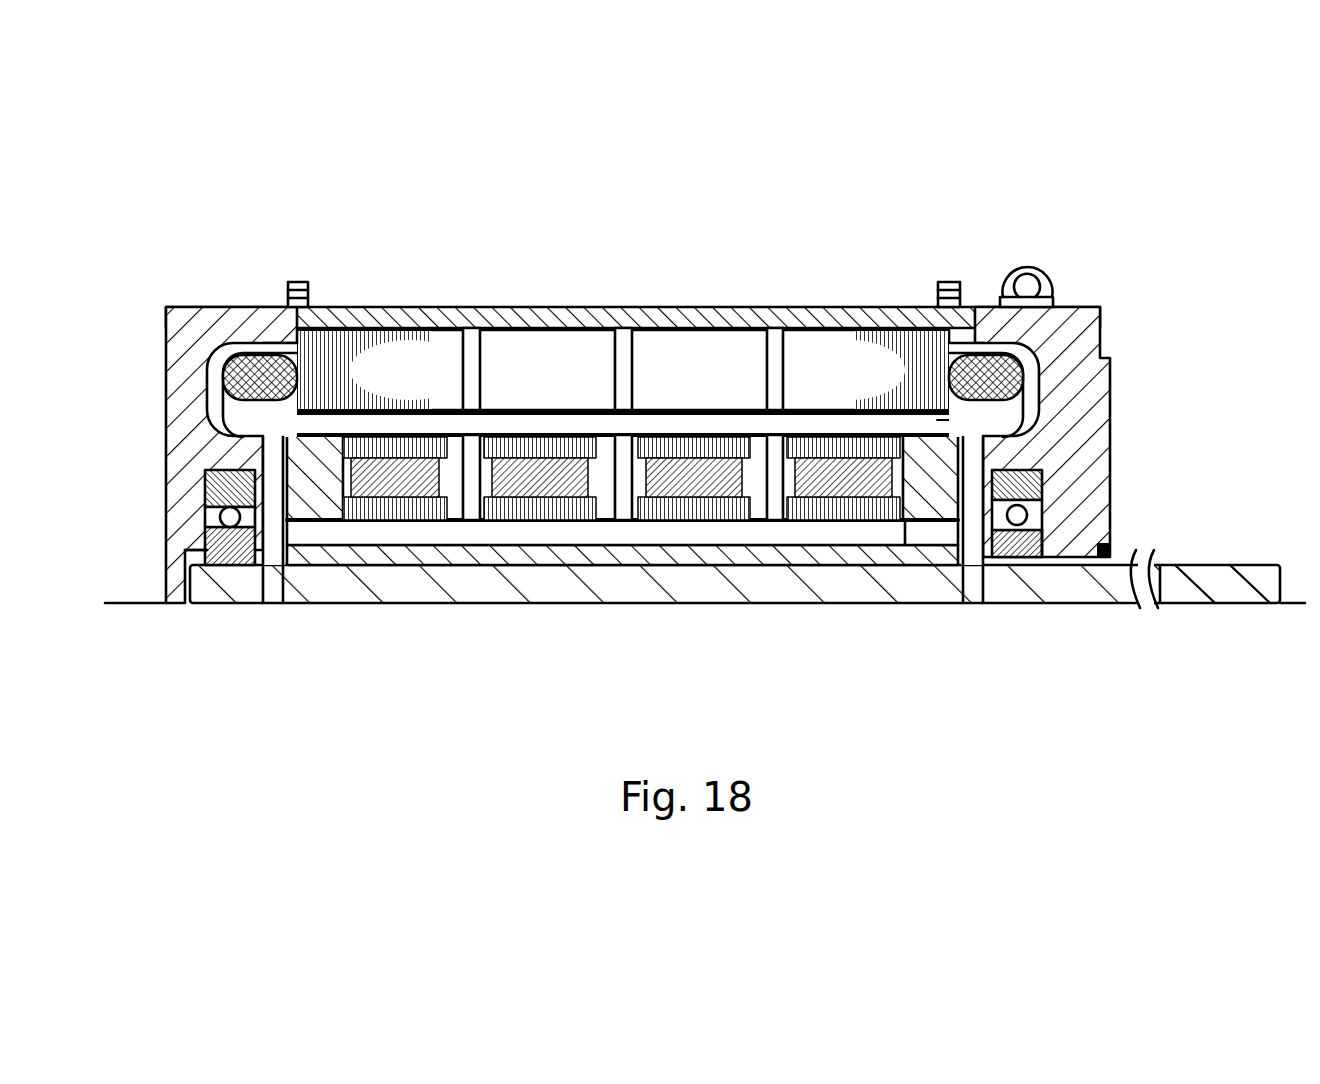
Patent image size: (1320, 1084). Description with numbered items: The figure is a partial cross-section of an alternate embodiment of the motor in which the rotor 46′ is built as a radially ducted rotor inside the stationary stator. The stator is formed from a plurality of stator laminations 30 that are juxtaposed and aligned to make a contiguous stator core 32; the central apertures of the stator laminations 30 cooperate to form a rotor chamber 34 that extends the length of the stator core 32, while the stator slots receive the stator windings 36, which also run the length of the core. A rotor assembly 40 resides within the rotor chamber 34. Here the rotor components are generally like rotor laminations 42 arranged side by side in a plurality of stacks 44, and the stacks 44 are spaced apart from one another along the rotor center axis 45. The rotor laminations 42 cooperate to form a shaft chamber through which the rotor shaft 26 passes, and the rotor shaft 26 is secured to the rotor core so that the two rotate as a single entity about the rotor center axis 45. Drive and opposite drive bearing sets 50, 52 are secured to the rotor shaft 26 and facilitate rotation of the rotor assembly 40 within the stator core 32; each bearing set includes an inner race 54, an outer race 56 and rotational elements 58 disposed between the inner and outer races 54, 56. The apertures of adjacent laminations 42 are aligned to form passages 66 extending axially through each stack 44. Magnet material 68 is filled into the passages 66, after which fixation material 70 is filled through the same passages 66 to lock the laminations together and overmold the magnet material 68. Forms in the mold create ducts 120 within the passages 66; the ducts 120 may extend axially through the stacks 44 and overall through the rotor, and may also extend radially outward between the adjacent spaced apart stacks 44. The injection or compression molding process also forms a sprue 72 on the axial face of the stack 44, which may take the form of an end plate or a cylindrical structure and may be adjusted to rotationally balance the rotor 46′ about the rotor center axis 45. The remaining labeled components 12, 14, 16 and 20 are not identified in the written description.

The top plate 12 is at (428, 307).
The right housing end 14 is at (1103, 313).
The left housing end 16 is at (183, 307).
The eye bolt 20 is at (1043, 262).
The rotor shaft 26 is at (1287, 580).
The stator laminations 30 is at (372, 328).
The stator core 32 is at (785, 307).
The rotor chamber 34 is at (1103, 420).
The stator windings 36 is at (975, 352).
The rotor assembly 40 is at (660, 603).
The rotor laminations 42 is at (398, 513).
The stack 44 is at (437, 518).
The rotor center axis 45 is at (105, 608).
The rotor 46′ is at (658, 432).
The drive bearing set 50 is at (185, 552).
The opposite drive bearing set 52 is at (1038, 533).
The inner race 54 is at (222, 603).
The outer race 56 is at (217, 475).
The rotational elements 58 is at (222, 518).
The passages 66 is at (558, 477).
The magnet material 68 is at (490, 470).
The fixation material 70 is at (305, 600).
The sprue 72 is at (270, 462).
The ducts 120 is at (620, 490).